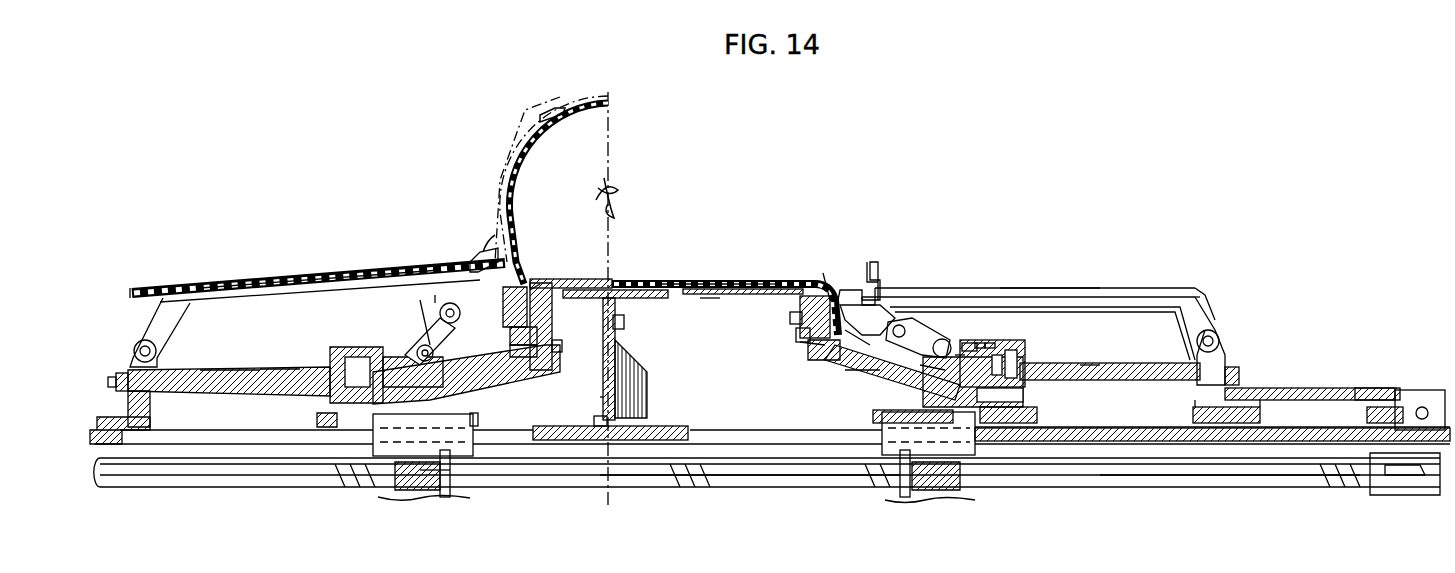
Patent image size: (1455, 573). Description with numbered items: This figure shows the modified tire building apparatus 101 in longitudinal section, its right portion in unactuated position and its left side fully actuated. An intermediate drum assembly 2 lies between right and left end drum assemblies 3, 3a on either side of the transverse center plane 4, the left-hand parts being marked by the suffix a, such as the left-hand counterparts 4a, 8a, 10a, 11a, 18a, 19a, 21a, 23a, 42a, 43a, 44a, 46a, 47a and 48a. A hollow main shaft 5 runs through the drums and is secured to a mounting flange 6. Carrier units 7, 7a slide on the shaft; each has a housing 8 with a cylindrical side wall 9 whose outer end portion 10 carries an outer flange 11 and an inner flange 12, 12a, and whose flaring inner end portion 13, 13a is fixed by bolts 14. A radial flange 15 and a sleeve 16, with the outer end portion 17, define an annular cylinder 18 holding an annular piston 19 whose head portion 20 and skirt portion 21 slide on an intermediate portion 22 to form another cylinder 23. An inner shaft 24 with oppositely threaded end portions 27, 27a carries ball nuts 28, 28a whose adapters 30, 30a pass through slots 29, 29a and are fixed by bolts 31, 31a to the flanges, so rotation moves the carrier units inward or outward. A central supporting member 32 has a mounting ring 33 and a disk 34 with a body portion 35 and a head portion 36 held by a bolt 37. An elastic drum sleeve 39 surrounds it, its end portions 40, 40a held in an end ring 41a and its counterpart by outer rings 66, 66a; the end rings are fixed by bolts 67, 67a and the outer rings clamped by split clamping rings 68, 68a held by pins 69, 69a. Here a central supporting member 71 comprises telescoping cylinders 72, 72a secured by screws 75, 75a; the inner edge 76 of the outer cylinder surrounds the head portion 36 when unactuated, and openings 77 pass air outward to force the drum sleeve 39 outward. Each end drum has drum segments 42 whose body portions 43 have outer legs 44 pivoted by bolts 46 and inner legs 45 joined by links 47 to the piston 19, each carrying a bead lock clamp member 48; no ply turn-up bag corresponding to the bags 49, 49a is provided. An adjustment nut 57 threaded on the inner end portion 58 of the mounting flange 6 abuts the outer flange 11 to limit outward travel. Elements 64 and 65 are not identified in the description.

The intermediate drum assembly 2 is at (735, 280).
The end drum assembly 3 is at (1084, 288).
The end drum assembly 3a is at (354, 268).
The transverse center plane 4 is at (610, 128).
The left plate 4a is at (240, 370).
The main shaft 5 is at (1284, 422).
The mounting flange 6 is at (1420, 392).
The carrier unit 7 is at (1240, 374).
The carrier unit 7a is at (116, 380).
The housing 8 is at (1090, 366).
The plate 8a is at (278, 370).
The side wall portion 9 is at (1128, 365).
The outer end portion 10 is at (1162, 364).
The support plate 10a is at (192, 370).
The outer annular flange 11 is at (790, 318).
The bracket 11a is at (128, 410).
The inner annular flange 12 is at (1038, 415).
The inner annular flange 12a is at (316, 410).
The inner end portion 13 is at (872, 372).
The inner end portion 13a is at (445, 390).
The bolts 14 is at (1025, 395).
The radially outwardly projecting flange 15 is at (1020, 362).
The sleeve 16 is at (958, 356).
The outer end portion 17 is at (958, 386).
The annular cylinder 18 is at (1025, 347).
The housing 18a is at (341, 347).
The annular piston 19 is at (998, 348).
The link 19a is at (380, 355).
The head portion 20 is at (1005, 346).
The skirt portion 21 is at (972, 342).
The pivot 21a is at (418, 350).
The intermediate portion 22 is at (910, 350).
The annular cylinder 23 is at (922, 372).
The lever 23a is at (405, 350).
The inner shaft 24 is at (752, 488).
The threaded end portion 27 is at (1062, 490).
The threaded end portion 27a is at (228, 490).
The ball nut 28 is at (866, 494).
The ball nut 28a is at (470, 492).
The slots 29 is at (740, 428).
The slots 29a is at (200, 432).
The adapters 30 is at (978, 440).
The adapters 30a is at (468, 446).
The bolts 31 is at (873, 417).
The bolts 31a is at (479, 416).
The central supporting member 32 is at (648, 384).
The mounting ring 33 is at (670, 425).
The disk 34 is at (602, 380).
The body portion 35 is at (602, 398).
The head portion 36 is at (612, 304).
The bolt 37 is at (622, 322).
The drum sleeve 39 is at (672, 280).
The end portion 40 is at (800, 302).
The end portion 40a is at (522, 320).
The end ring 41a is at (554, 320).
The drum segments 42 is at (1118, 290).
The cover 42a is at (240, 284).
The body portion 43 is at (1160, 288).
The cover edge 43a is at (312, 275).
The outer leg 44 is at (1212, 330).
The hinge arm 44a is at (150, 320).
The inner leg 45 is at (885, 320).
The bolts 46 is at (1220, 341).
The hinge pin 46a is at (134, 346).
The link 47 is at (928, 345).
The link 47a is at (445, 300).
The bead lock clamp member 48 is at (833, 272).
The latch hook 48a is at (492, 232).
The ply turn-up bag 49 is at (1202, 291).
The ply turn-up bag 49a is at (133, 290).
The adjustment nut 57 is at (1337, 386).
The inner end portion 58 is at (1388, 386).
The screw 64 is at (594, 420).
The catch 65 is at (885, 333).
The outer ring 66 is at (866, 285).
The outer ring 66a is at (478, 250).
The bolts 67 is at (798, 338).
The bolts 67a is at (563, 348).
The split clamping ring 68 is at (838, 362).
The split clamping ring 68a is at (512, 338).
The pins 69 is at (822, 348).
The pins 69a is at (510, 352).
The central supporting member 71 is at (710, 302).
The cylinder 72 is at (707, 280).
The cylinder 72a is at (610, 278).
The screws 75 is at (738, 292).
The screws 75a is at (538, 275).
The inner edge 76 is at (618, 282).
The openings 77 is at (768, 280).
The tire building apparatus 101 is at (1217, 268).